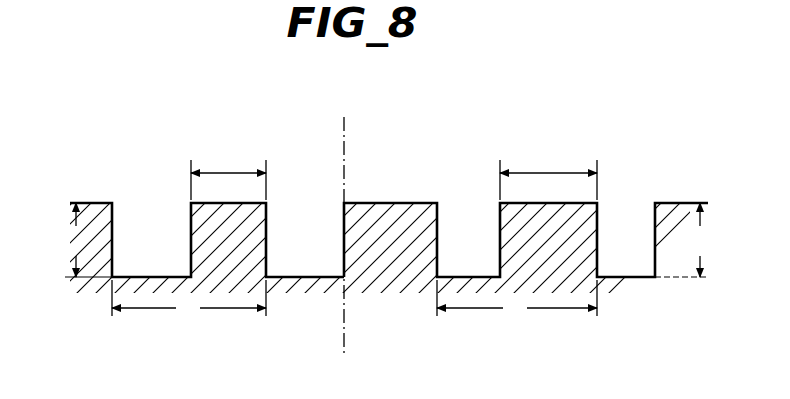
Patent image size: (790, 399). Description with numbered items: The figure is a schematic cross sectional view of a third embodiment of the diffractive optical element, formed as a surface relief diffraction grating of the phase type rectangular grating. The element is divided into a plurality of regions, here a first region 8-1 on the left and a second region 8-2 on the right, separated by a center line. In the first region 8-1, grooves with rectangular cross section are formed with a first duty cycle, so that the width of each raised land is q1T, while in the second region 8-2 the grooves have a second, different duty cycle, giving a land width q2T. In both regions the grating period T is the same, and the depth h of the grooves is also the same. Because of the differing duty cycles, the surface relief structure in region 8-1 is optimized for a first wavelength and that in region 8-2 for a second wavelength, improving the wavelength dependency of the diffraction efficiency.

The first region 8-1 is at (337, 130).
The second region 8-2 is at (642, 130).
The groove depth h is at (387, 240).
The grating period T is at (354, 300).
The land width of first region q1T is at (228, 171).
The land width of second region q2T is at (548, 171).